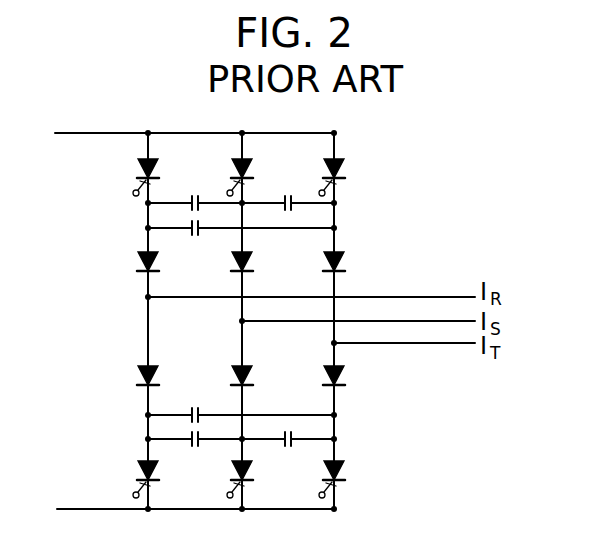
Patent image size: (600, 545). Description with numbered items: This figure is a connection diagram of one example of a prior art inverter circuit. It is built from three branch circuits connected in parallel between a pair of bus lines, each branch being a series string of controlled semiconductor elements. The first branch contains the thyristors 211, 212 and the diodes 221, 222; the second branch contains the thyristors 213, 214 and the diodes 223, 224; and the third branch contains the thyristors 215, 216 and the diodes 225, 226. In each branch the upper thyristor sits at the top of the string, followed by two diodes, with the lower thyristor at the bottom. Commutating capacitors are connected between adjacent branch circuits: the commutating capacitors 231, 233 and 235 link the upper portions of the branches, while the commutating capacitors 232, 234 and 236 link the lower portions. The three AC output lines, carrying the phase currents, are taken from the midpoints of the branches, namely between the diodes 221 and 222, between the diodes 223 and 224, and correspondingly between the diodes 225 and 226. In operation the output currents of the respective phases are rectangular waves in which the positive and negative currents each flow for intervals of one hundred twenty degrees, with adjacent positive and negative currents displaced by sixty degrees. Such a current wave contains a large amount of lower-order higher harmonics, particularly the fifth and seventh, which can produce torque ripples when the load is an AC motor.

The thyristor 211 is at (137, 169).
The thyristor 213 is at (248, 164).
The thyristor 215 is at (345, 168).
The thyristor 212 is at (154, 477).
The thyristor 214 is at (248, 477).
The thyristor 216 is at (344, 477).
The diode 221 is at (138, 263).
The diode 223 is at (251, 266).
The diode 225 is at (345, 265).
The diode 222 is at (152, 369).
The diode 224 is at (246, 370).
The diode 226 is at (345, 380).
The commutating capacitor 231 is at (213, 162).
The commutating capacitor 233 is at (285, 198).
The commutating capacitor 235 is at (194, 233).
The commutating capacitor 232 is at (190, 437).
The commutating capacitor 234 is at (293, 437).
The commutating capacitor 236 is at (193, 408).